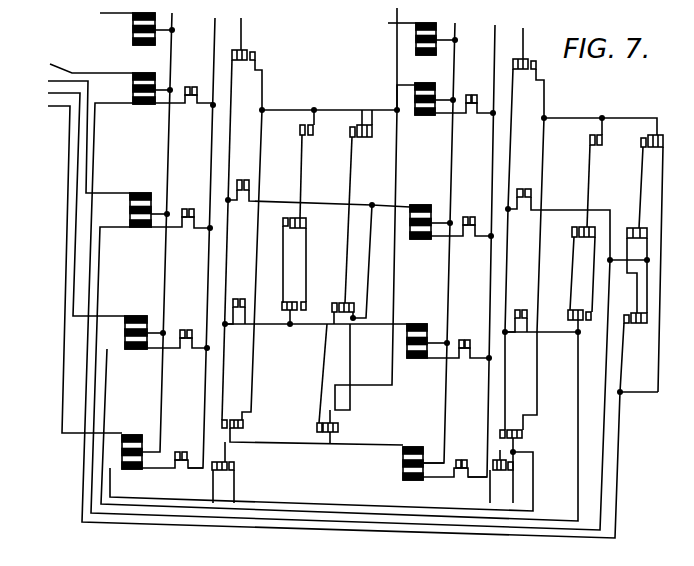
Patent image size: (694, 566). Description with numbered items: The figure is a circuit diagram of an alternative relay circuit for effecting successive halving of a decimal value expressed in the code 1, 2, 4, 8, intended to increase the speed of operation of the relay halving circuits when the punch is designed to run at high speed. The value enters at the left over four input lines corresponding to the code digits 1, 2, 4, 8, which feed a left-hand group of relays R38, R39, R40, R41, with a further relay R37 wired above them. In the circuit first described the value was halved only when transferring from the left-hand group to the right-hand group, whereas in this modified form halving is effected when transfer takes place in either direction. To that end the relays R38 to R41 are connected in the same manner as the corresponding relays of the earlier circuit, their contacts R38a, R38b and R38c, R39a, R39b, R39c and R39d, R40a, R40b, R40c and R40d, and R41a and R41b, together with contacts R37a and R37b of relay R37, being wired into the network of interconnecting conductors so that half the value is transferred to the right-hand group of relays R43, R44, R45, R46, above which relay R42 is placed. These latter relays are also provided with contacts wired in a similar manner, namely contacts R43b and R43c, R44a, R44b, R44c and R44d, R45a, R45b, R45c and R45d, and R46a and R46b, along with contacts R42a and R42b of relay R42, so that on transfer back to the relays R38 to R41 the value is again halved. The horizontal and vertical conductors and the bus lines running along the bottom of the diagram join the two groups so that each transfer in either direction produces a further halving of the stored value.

The code digit 1 is at (100, 13).
The code digit 2 is at (80, 200).
The code digit 4 is at (83, 132).
The code digit 8 is at (84, 65).
The relay R37 is at (136, 33).
The relay R38 is at (147, 80).
The relay R39 is at (146, 195).
The relay R40 is at (135, 318).
The relay R41 is at (130, 437).
The relay R42 is at (420, 39).
The relay R43 is at (423, 84).
The relay R44 is at (420, 206).
The relay R45 is at (415, 325).
The relay R46 is at (415, 446).
The relay contact R37a is at (250, 55).
The relay contact R37b is at (305, 125).
The relay contact R38a is at (250, 188).
The relay contact R38b is at (363, 125).
The relay contact R38c is at (190, 86).
The relay contact R39a is at (244, 312).
The relay contact R39b is at (297, 303).
The relay contact R39c is at (343, 313).
The relay contact R39d is at (188, 208).
The relay contact R40a is at (243, 421).
The relay contact R40b is at (306, 224).
The relay contact R40c is at (325, 433).
The relay contact R40d is at (182, 330).
The relay contact R41a is at (235, 468).
The relay contact R41b is at (178, 452).
The relay contact R42a is at (537, 65).
The relay contact R42b is at (598, 135).
The relay contact R43b is at (655, 135).
The relay contact R43c is at (470, 96).
The relay contact R44a is at (527, 190).
The relay contact R44b is at (582, 227).
The relay contact R44c is at (635, 228).
The relay contact R44d is at (467, 217).
The relay contact R45a is at (524, 434).
The relay contact R45b is at (575, 322).
The relay contact R45c is at (632, 324).
The relay contact R45d is at (462, 340).
The relay contact R46a is at (500, 470).
The relay contact R46b is at (460, 458).